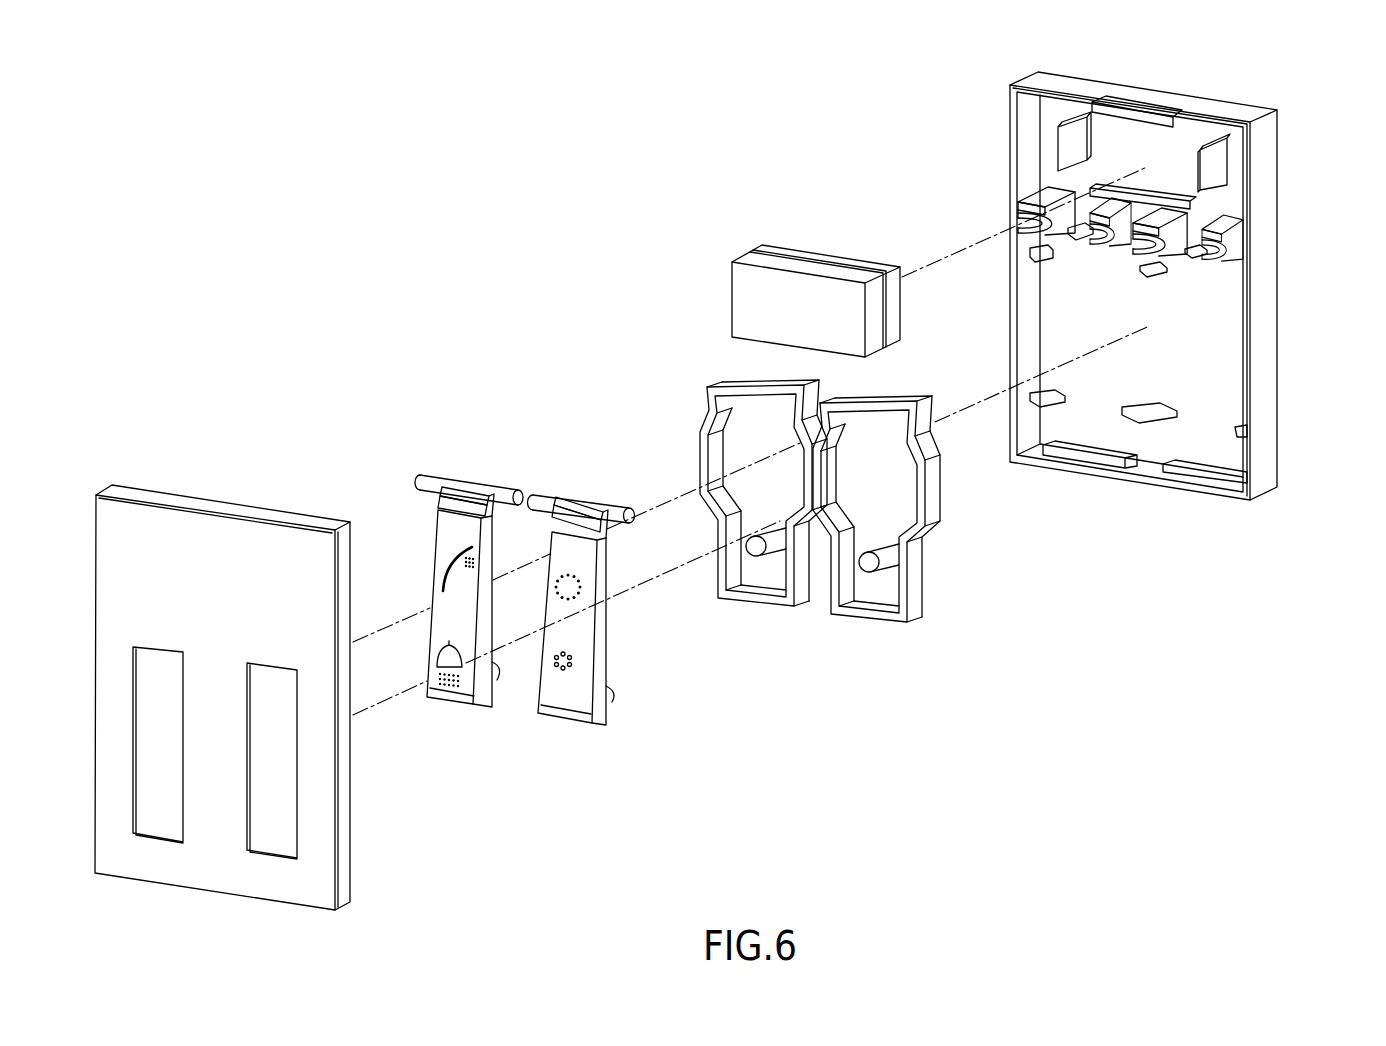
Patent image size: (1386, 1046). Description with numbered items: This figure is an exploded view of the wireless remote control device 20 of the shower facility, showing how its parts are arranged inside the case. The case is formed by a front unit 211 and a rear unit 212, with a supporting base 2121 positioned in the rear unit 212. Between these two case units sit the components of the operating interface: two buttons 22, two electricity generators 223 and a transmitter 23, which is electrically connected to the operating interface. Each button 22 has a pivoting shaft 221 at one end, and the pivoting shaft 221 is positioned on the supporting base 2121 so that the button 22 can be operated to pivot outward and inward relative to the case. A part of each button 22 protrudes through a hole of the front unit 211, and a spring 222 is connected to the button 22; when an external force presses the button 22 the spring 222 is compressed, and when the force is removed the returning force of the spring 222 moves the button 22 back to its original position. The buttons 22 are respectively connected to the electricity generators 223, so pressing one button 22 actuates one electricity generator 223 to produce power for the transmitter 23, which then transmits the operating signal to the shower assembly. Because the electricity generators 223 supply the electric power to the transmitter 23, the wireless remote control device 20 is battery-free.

The wireless remote control device 20 is at (303, 250).
The front unit 211 is at (160, 495).
The rear unit 212 is at (1173, 98).
The supporting base 2121 is at (1243, 217).
The button 22 is at (445, 537).
The pivoting shaft 221 is at (460, 484).
The spring 222 is at (497, 676).
The electricity generator 223 is at (723, 381).
The transmitter 23 is at (757, 297).